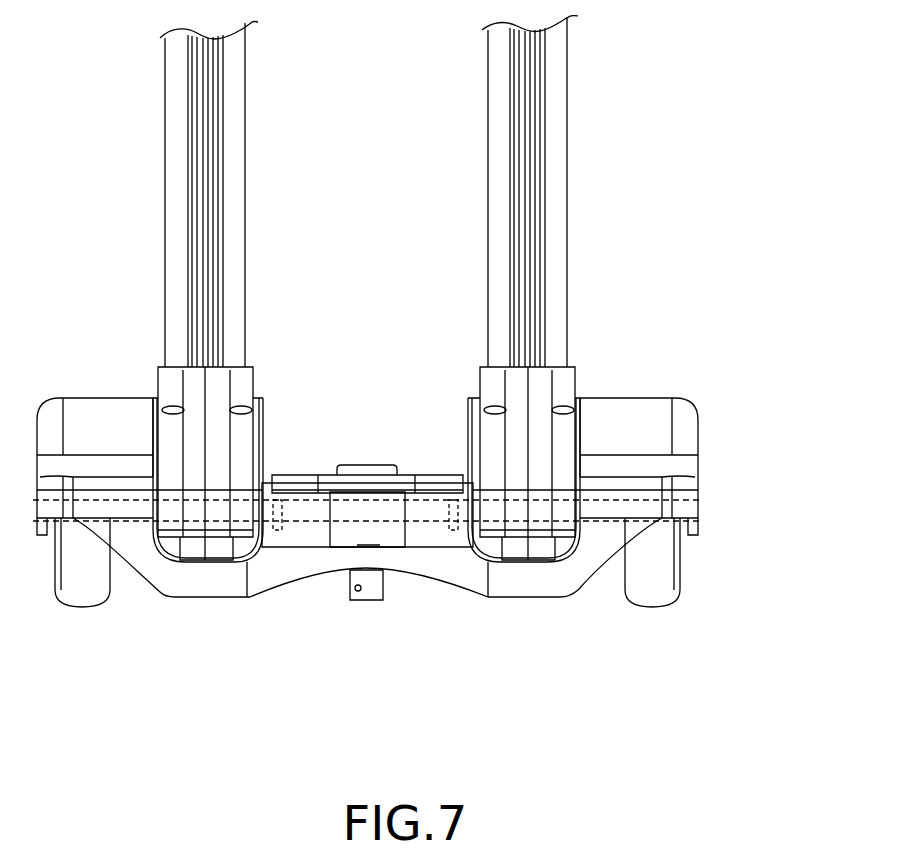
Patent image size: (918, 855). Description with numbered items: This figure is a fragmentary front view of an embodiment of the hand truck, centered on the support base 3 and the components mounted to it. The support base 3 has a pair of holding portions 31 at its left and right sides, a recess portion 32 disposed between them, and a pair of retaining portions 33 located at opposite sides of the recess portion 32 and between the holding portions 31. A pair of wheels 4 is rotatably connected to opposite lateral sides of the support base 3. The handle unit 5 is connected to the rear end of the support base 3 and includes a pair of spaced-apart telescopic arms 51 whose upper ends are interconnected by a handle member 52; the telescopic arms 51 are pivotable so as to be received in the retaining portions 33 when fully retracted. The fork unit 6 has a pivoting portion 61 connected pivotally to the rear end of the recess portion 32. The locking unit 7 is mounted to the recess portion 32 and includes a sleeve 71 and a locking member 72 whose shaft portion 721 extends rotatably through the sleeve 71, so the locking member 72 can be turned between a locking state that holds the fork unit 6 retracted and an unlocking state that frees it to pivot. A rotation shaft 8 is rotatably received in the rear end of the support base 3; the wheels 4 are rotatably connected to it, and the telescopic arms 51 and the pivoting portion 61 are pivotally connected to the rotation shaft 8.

The support base 3 is at (412, 512).
The holding portions 31 is at (102, 470).
The recess portion 32 is at (315, 535).
The retaining portions 33 is at (197, 545).
The wheels 4 is at (82, 590).
The handle unit 5 is at (588, 143).
The telescopic arms 51 is at (207, 207).
The handle member 52 is at (366, 463).
The fork unit 6 is at (300, 487).
The pivoting portion 61 is at (273, 550).
The locking unit 7 is at (395, 524).
The sleeve 71 is at (367, 519).
The locking member 72 is at (367, 465).
The shaft portion 721 is at (372, 585).
The rotation shaft 8 is at (700, 510).